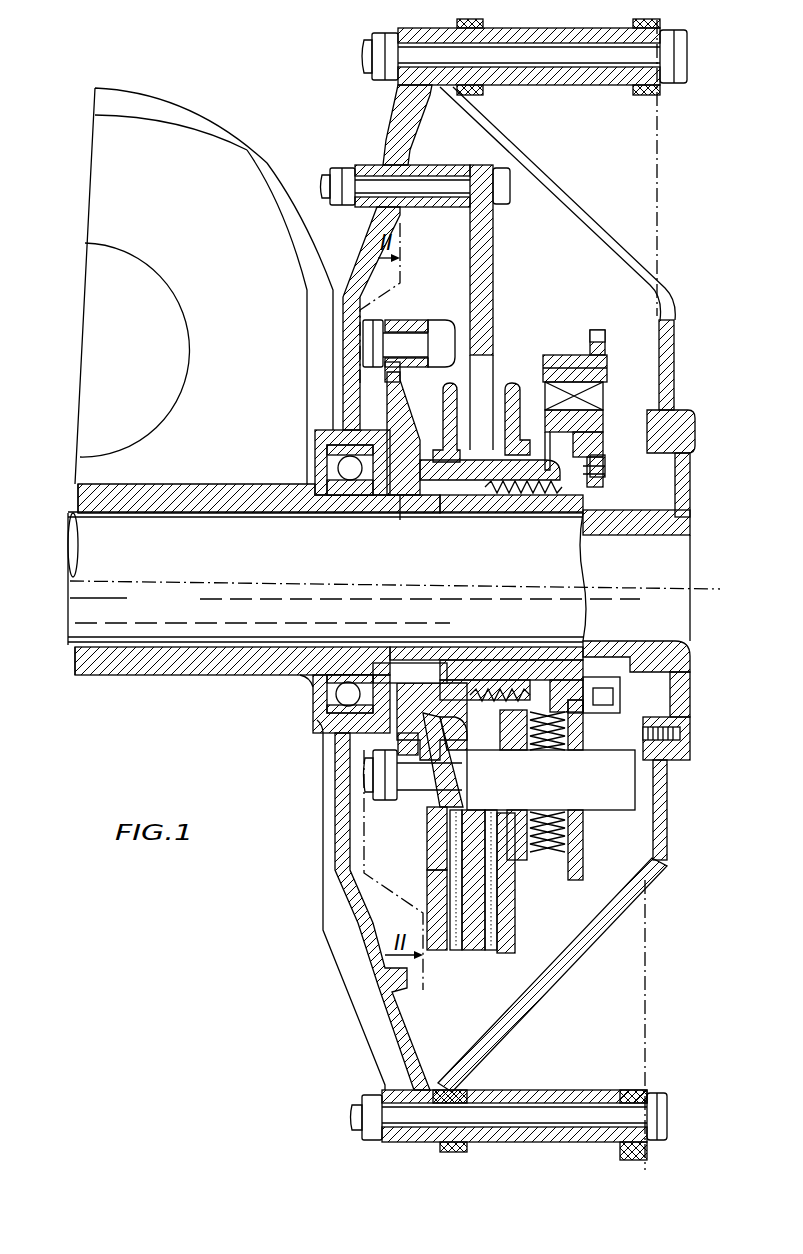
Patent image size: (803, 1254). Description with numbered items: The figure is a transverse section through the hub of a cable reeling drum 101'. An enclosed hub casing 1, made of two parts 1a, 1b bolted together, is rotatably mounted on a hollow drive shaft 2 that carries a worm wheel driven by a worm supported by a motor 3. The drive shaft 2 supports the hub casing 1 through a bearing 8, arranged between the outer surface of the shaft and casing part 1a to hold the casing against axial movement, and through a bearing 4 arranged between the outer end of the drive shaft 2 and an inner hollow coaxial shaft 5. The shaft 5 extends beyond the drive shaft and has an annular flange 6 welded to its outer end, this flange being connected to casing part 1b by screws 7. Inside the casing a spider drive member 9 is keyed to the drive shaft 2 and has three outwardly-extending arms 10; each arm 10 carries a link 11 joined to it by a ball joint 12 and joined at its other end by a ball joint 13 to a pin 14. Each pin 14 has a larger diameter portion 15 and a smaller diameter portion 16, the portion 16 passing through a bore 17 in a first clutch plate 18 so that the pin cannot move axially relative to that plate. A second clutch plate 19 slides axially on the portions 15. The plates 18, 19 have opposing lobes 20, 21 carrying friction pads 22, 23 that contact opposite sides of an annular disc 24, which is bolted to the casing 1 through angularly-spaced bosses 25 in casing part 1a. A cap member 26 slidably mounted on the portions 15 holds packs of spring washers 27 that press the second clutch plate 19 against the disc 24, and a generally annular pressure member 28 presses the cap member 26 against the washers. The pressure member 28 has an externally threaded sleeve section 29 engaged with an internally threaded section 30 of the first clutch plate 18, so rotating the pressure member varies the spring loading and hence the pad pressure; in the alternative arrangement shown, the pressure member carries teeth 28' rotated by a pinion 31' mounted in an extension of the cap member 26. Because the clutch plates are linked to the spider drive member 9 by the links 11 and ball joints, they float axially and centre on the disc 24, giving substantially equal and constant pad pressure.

The hub casing 1 is at (516, 140).
The casing part 1a is at (340, 853).
The casing part 1b is at (648, 877).
The drive shaft 2 is at (255, 492).
The motor 3 is at (258, 160).
The bearing 4 is at (518, 513).
The inner hollow coaxial shaft 5 is at (620, 531).
The annular flange 6 is at (667, 650).
The screws 7 is at (687, 731).
The bearing 8 is at (338, 466).
The spider drive member 9 is at (413, 513).
The arms 10 is at (388, 393).
The link 11 is at (410, 368).
The ball joint 12 is at (423, 320).
The ball joint 13 is at (400, 813).
The pin 14 is at (458, 800).
The larger diameter portion 15 is at (552, 792).
The smaller diameter portion 16 is at (467, 781).
The bore 17 is at (463, 767).
The first clutch plate 18 is at (457, 398).
The second clutch plate 19 is at (525, 383).
The lobes 20 is at (437, 875).
The lobes 21 is at (512, 913).
The friction pads 22 is at (457, 951).
The friction pads 23 is at (491, 951).
The annular disc 24 is at (488, 268).
The bosses 25 is at (437, 165).
The cap member 26 is at (567, 853).
The spring washers 27 is at (532, 843).
The pressure member 28 is at (594, 712).
The teeth 28' is at (615, 450).
The sleeve section 29 is at (545, 488).
The internally threaded section 30 is at (498, 483).
The pinion 31' is at (596, 408).
The cable reeling drum 101' is at (524, 76).